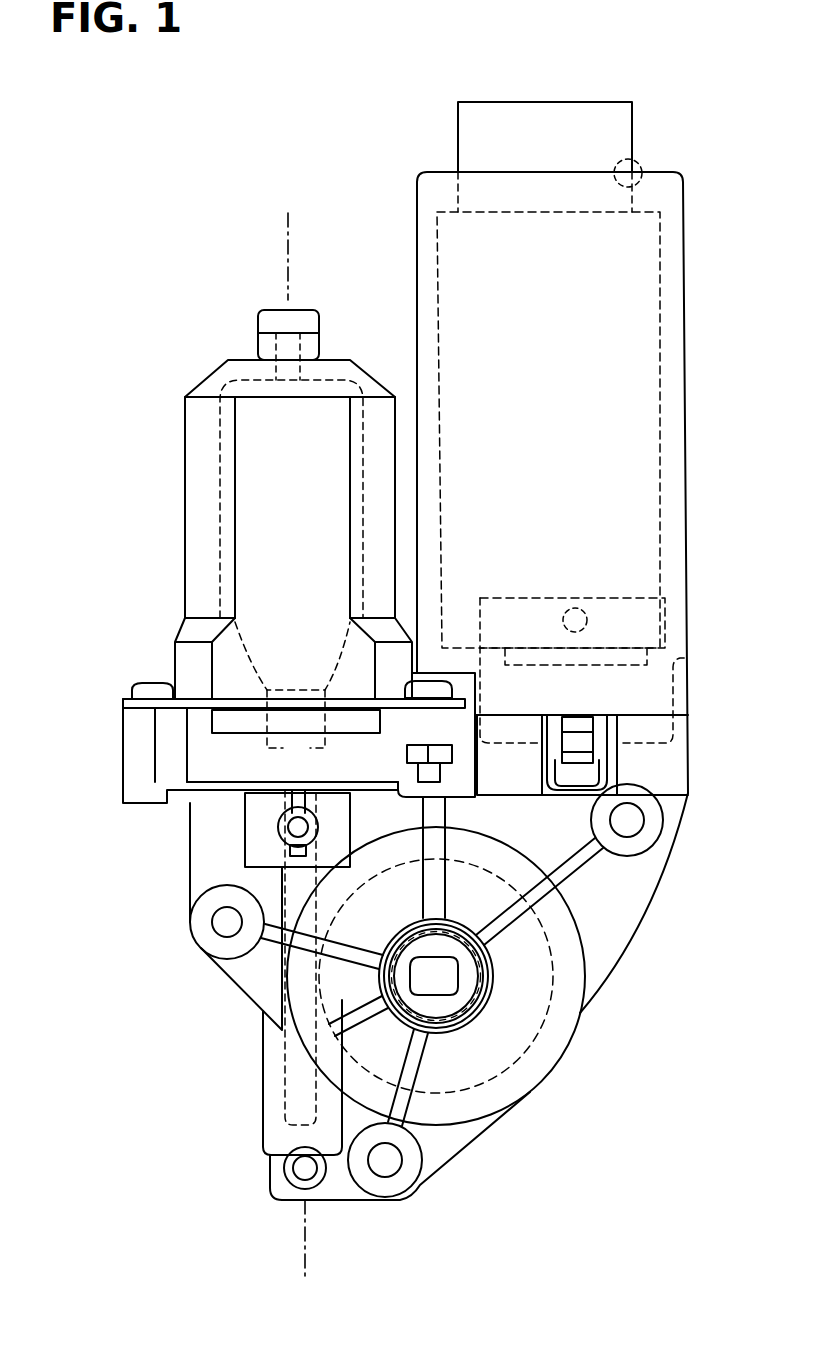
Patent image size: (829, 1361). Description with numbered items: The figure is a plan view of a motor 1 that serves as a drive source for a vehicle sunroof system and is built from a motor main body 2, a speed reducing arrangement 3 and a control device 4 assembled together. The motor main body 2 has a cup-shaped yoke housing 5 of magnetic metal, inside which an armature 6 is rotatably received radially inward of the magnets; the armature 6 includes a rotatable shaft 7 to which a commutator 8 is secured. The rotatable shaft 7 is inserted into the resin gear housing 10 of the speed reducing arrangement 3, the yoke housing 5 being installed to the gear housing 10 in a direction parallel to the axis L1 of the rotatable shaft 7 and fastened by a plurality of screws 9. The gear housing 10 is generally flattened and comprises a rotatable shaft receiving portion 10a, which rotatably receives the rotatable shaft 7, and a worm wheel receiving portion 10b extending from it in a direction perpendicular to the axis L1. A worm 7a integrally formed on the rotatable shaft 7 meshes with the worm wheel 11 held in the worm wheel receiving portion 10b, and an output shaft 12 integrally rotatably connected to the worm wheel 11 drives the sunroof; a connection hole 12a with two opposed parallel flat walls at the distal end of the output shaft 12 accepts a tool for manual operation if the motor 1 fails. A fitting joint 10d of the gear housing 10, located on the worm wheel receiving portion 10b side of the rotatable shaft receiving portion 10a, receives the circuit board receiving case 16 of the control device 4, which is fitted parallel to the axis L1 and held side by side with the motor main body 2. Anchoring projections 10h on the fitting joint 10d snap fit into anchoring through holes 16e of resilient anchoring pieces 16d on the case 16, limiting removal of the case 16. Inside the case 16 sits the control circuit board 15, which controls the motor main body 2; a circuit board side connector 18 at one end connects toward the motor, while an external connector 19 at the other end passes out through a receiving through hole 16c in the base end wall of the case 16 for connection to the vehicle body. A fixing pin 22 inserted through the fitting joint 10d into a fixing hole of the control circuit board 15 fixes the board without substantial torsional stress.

The motor 1 is at (144, 222).
The motor main body 2 is at (206, 376).
The speed reducing arrangement 3 is at (185, 880).
The control device 4 is at (688, 375).
The yoke housing 5 is at (185, 432).
The armature 6 is at (218, 522).
The rotatable shaft 7 is at (282, 762).
The worm 7a is at (262, 1022).
The commutator 8 is at (254, 680).
The screws 9 is at (155, 682).
The gear housing 10 is at (198, 824).
The rotatable shaft receiving portion 10a is at (268, 1102).
The worm wheel receiving portion 10b is at (563, 1025).
The fitting joint 10d is at (688, 658).
The anchoring projection 10h is at (570, 757).
The worm wheel 11 is at (535, 1093).
The output shaft 12 is at (450, 938).
The connection hole 12a is at (420, 957).
The control circuit board 15 is at (662, 462).
The circuit board receiving case 16 is at (686, 250).
The receiving through hole 16c is at (640, 168).
The anchoring piece 16d is at (577, 782).
The anchoring through hole 16e is at (590, 754).
The circuit board side connector 18 is at (550, 668).
The external connector 19 is at (535, 106).
The fixing pin 22 is at (590, 614).
The axis of the rotatable shaft L1 is at (288, 251).